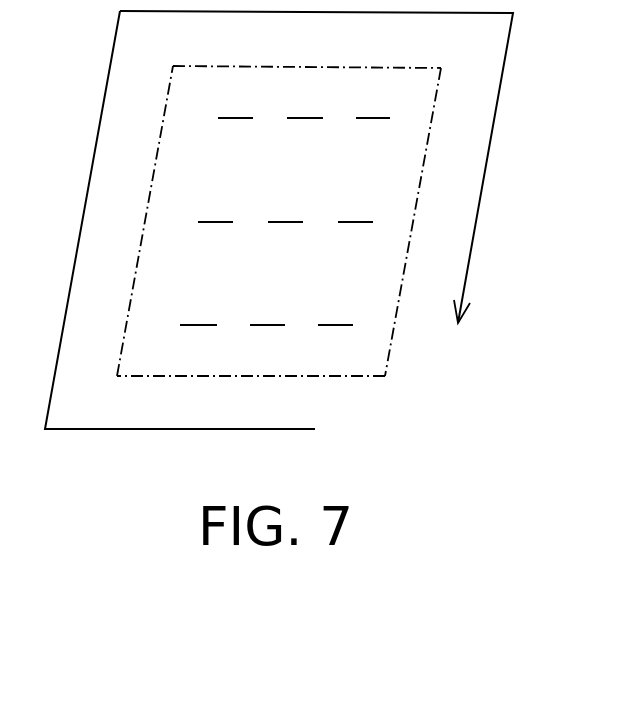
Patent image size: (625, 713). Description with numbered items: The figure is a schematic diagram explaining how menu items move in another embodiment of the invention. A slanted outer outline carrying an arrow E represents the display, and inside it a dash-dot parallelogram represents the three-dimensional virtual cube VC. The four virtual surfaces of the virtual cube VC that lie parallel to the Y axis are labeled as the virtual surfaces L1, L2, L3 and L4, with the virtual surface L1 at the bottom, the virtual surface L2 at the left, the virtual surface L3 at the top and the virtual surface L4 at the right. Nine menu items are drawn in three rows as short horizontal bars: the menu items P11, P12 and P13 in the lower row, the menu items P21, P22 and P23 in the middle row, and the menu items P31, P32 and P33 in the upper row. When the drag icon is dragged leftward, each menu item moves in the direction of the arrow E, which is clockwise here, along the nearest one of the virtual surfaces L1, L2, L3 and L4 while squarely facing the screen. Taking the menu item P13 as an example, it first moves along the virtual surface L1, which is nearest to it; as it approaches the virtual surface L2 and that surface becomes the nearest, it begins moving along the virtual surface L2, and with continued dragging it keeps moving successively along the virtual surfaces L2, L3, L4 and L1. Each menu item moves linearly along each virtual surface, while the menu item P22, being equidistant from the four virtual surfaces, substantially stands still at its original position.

The arrow E is at (490, 145).
The three-dimensional virtual cube VC is at (291, 234).
The virtual surface L1 is at (231, 377).
The virtual surface L2 is at (135, 221).
The virtual surface L3 is at (325, 66).
The virtual surface L4 is at (415, 205).
The menu item P11 is at (194, 292).
The menu item P12 is at (271, 292).
The menu item P13 is at (352, 292).
The menu item P21 is at (212, 189).
The menu item P22 is at (296, 189).
The menu item P23 is at (369, 189).
The menu item P31 is at (234, 85).
The menu item P32 is at (306, 85).
The menu item P33 is at (379, 85).